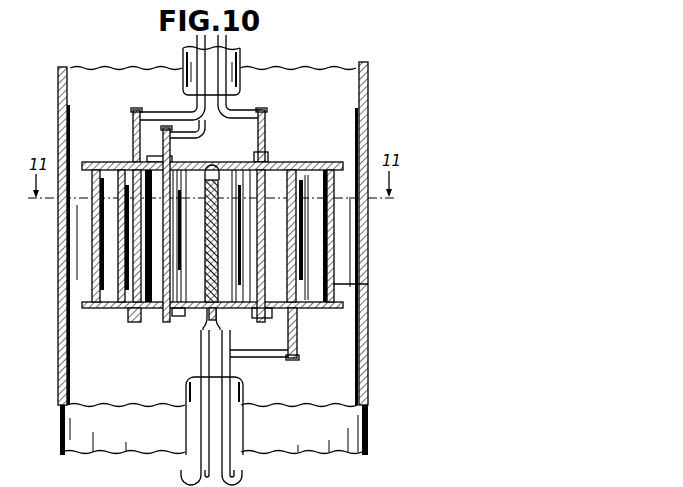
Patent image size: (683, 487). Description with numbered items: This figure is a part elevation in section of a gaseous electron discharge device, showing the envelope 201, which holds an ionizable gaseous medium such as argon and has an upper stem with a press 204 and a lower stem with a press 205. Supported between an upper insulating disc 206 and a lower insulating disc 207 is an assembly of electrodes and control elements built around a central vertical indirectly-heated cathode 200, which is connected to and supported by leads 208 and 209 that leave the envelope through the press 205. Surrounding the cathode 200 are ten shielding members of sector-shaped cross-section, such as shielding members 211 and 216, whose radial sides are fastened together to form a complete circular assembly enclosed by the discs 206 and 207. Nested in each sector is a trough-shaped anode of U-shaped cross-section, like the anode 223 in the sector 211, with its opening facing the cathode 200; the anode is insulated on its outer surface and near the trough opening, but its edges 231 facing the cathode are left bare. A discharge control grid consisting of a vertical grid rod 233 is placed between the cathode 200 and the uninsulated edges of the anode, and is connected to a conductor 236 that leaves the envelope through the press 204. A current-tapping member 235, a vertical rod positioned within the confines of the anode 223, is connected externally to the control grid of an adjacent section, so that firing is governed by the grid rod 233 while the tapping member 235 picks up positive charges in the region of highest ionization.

The cathode 200 is at (206, 166).
The envelope 201 is at (60, 416).
The press 204 is at (240, 58).
The press 205 is at (237, 384).
The upper insulating disc 206 is at (303, 165).
The lower insulating disc 207 is at (304, 309).
The lead 208 is at (205, 348).
The lead 209 is at (229, 338).
The shielding member 211 is at (96, 285).
The shielding member 216 is at (368, 284).
The anode 223 is at (118, 305).
The edges 231 is at (153, 309).
The grid rod 233 is at (163, 305).
The current-tapping member 235 is at (132, 312).
The conductor 236 is at (195, 134).